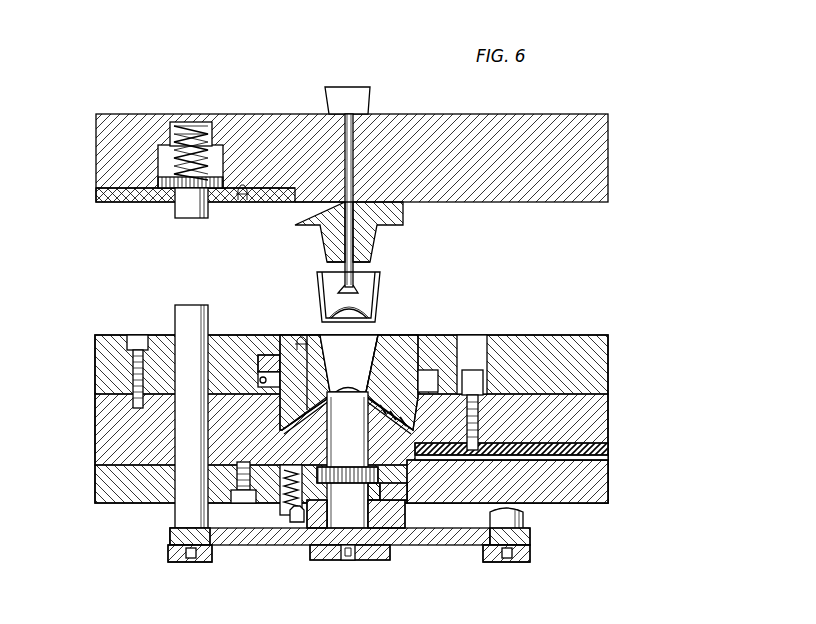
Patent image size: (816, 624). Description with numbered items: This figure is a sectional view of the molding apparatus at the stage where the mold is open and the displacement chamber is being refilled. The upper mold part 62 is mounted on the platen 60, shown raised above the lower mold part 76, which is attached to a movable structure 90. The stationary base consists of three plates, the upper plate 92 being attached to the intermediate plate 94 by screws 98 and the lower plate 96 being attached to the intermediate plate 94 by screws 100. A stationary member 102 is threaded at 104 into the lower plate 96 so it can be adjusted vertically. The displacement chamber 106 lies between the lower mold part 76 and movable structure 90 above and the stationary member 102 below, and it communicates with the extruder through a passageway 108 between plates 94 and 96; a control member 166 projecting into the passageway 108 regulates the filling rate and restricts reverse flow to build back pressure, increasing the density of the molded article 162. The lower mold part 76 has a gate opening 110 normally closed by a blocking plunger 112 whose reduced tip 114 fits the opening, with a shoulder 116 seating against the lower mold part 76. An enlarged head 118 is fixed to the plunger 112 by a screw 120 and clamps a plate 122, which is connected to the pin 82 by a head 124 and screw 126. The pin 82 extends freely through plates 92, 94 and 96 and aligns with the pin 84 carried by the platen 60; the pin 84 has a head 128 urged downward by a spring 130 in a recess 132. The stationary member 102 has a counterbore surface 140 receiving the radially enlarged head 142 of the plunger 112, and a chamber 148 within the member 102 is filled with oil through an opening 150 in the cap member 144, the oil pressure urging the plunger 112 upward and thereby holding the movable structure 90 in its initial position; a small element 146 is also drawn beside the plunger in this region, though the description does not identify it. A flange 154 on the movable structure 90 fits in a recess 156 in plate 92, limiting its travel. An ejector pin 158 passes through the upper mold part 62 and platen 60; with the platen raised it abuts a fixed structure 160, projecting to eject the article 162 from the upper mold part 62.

The platen 60 is at (565, 203).
The upper mold part 62 is at (405, 216).
The lower mold part 76 is at (378, 342).
The pin 82 is at (200, 316).
The pin 84 is at (208, 212).
The movable structure 90 is at (400, 338).
The upper plate 92 is at (95, 372).
The intermediate plate 94 is at (95, 432).
The lower plate 96 is at (95, 482).
The screws 98 is at (138, 408).
The screws 100 is at (244, 462).
The stationary member 102 is at (400, 500).
The threads 104 is at (430, 490).
The displacement chamber 106 is at (300, 420).
The passageway 108 is at (610, 450).
The gate opening 110 is at (360, 392).
The blocking plunger 112 is at (356, 501).
The reduced tip 114 is at (347, 460).
The shoulder 116 is at (344, 350).
The enlarged head 118 is at (390, 554).
The screw 120 is at (350, 562).
The plate 122 is at (442, 548).
The head 124 is at (206, 548).
The screw 126 is at (192, 562).
The head 128 is at (225, 182).
The spring 130 is at (215, 130).
The recess 132 is at (222, 162).
The counterbore surface 140 is at (380, 478).
The radially enlarged head 142 is at (344, 450).
The cap member 144 is at (310, 548).
The spring seat 146 is at (290, 516).
The chamber 148 is at (286, 480).
The opening 150 is at (368, 510).
The flange 154 is at (258, 362).
The recess 156 is at (258, 380).
The ejector pin 158 is at (358, 278).
The fixed structure 160 is at (372, 96).
The article 162 is at (382, 305).
The control member 166 is at (480, 436).